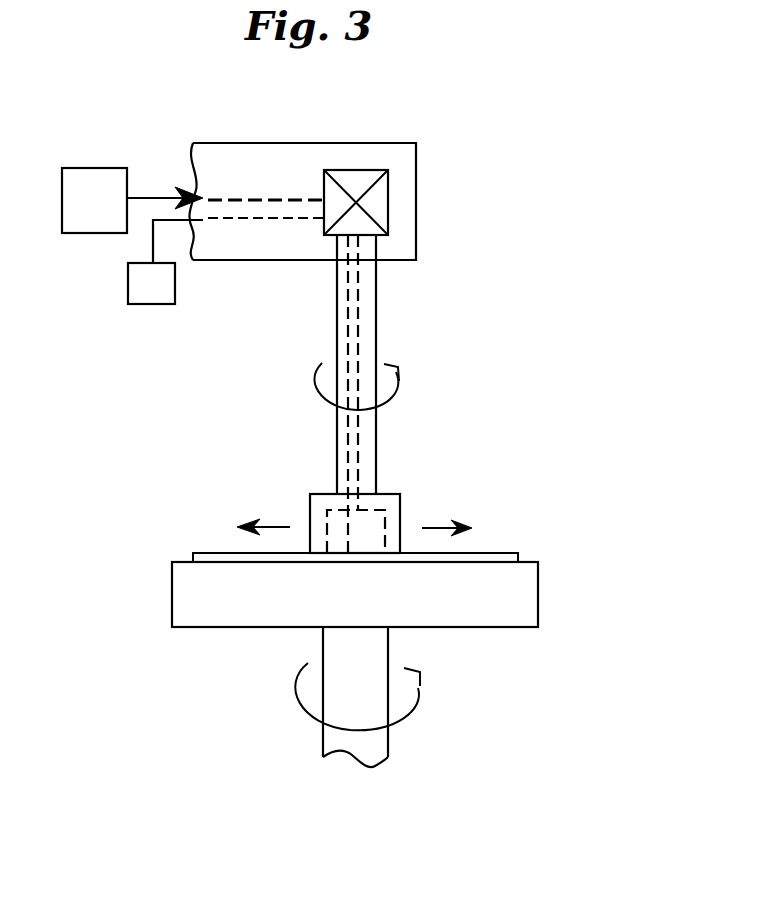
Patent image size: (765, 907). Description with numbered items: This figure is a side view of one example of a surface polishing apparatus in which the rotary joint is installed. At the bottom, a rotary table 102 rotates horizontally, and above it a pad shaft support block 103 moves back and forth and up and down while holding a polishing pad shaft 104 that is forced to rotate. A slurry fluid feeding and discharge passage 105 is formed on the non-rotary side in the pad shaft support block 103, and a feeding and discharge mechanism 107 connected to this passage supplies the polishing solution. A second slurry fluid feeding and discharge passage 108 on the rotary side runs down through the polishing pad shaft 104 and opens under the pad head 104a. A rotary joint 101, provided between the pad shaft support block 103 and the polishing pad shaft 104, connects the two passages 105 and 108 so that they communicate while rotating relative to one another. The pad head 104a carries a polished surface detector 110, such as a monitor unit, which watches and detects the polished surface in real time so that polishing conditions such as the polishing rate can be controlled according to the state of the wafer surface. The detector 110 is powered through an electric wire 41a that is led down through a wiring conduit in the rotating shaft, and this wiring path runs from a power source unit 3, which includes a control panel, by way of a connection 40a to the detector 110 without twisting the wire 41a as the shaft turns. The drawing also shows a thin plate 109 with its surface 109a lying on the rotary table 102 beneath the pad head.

The feeding and discharge mechanism 107 is at (88, 168).
The signal line 40a is at (150, 243).
The power source unit 3 is at (150, 306).
The pad shaft support block 103 is at (416, 197).
The slurry fluid feeding and discharge passage 105 is at (243, 197).
The rotary joint 101 is at (354, 170).
The polishing pad shaft 104 is at (337, 330).
The slurry fluid feeding and discharge passage 108 is at (360, 310).
The electric wire 41a is at (346, 434).
The pad head 104a is at (390, 494).
The thin plate 109 is at (222, 553).
The plate surface 109a is at (485, 553).
The rotary table 102 is at (538, 592).
The polished surface detector 110 is at (355, 555).